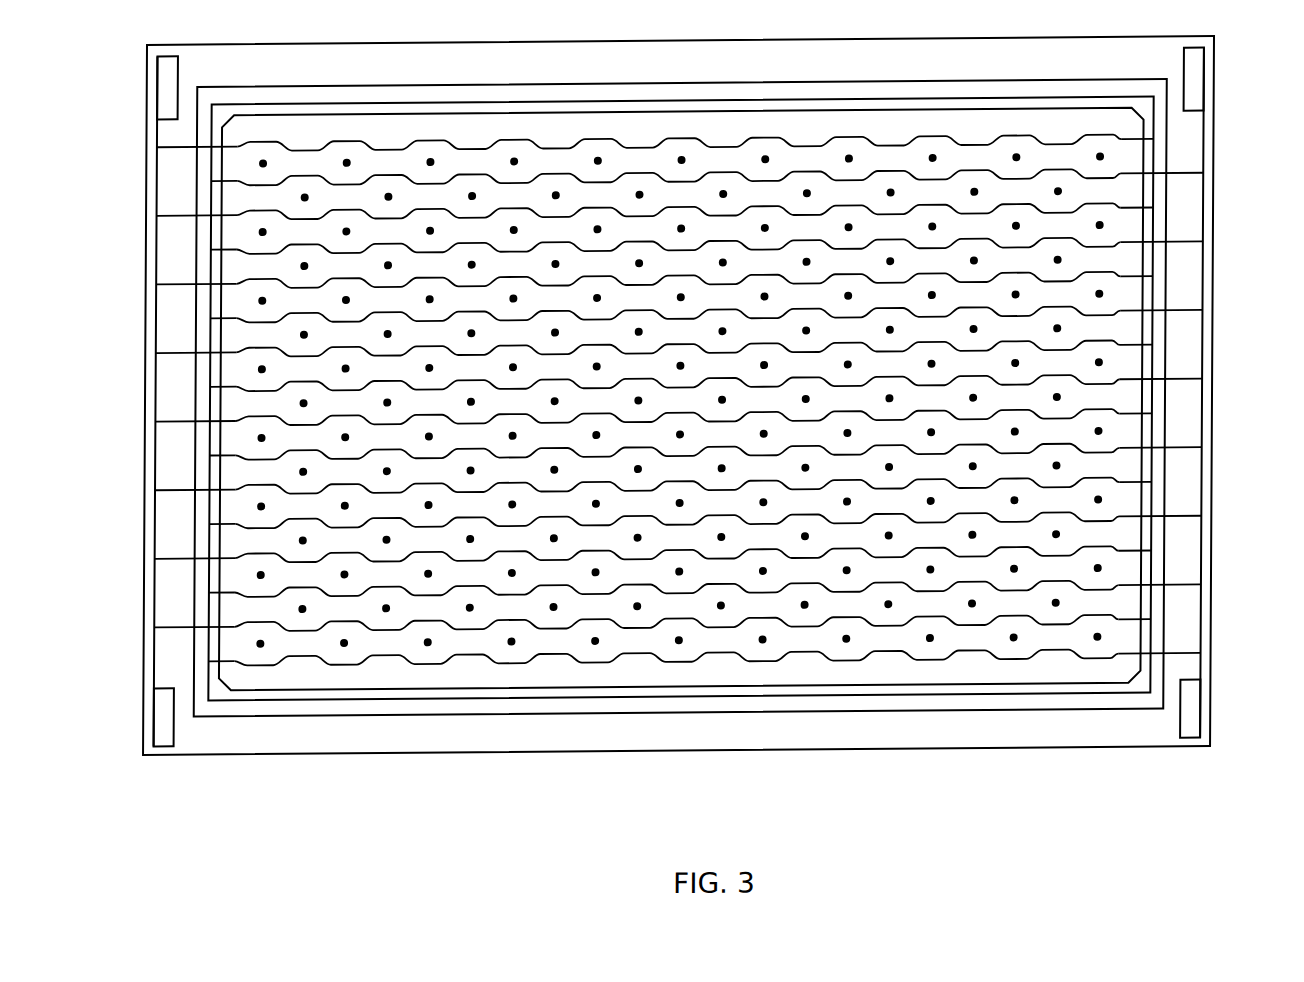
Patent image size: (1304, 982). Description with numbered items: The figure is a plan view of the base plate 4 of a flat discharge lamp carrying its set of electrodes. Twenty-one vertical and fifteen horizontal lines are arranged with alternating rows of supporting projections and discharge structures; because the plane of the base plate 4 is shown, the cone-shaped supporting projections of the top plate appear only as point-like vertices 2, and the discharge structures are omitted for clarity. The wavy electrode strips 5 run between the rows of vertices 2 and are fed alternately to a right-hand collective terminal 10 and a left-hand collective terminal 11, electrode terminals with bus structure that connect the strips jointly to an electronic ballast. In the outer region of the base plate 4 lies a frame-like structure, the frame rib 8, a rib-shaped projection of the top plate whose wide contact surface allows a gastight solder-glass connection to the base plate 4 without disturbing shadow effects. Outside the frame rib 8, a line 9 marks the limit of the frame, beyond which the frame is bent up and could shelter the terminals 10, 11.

The vertices of the supporting projections 2 is at (847, 642).
The base plate 4 is at (393, 735).
The electrode strips 5 is at (554, 653).
The frame rib 8 is at (1142, 686).
The line showing the limit of the frame 9 is at (1048, 713).
The right-hand collective terminal 10 is at (1188, 81).
The left-hand collective terminal 11 is at (166, 84).